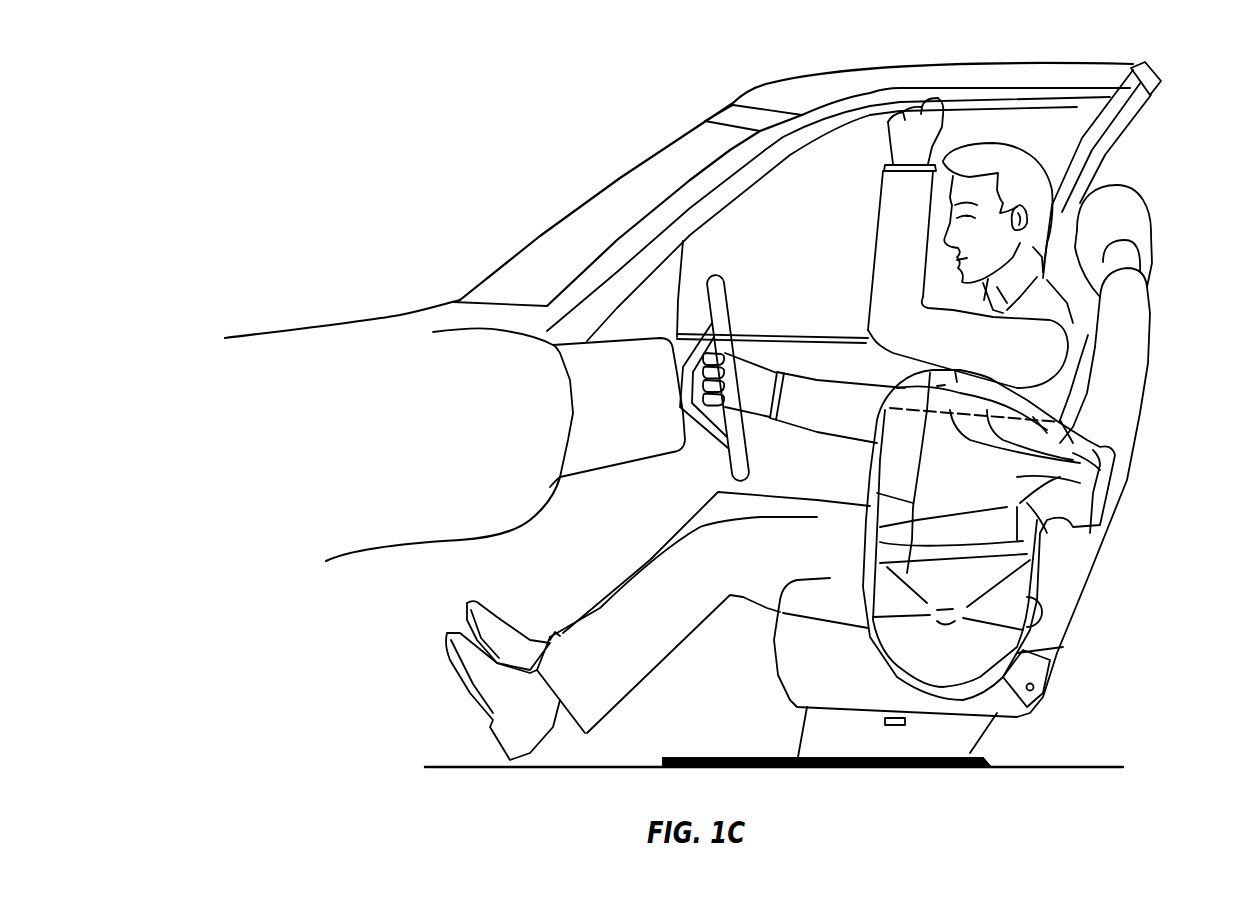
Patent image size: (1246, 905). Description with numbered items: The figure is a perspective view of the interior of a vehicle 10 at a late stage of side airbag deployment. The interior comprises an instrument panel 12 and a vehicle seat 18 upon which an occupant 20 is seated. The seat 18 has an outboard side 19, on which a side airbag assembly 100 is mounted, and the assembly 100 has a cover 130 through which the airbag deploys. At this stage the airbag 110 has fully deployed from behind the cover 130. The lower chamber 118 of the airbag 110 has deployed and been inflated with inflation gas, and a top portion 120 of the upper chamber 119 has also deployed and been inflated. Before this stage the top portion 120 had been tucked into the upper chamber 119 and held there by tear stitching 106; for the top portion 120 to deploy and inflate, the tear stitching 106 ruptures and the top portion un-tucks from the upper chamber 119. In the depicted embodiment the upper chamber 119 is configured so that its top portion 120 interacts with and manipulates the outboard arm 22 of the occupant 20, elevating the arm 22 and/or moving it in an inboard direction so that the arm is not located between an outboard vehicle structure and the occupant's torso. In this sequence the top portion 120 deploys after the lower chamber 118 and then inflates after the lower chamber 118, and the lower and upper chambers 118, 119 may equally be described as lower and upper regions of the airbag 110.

The vehicle 10 is at (665, 91).
The instrument panel 12 is at (565, 373).
The vehicle seat 18 is at (1127, 280).
The outboard side 19 is at (1132, 348).
The occupant 20 is at (1068, 318).
The outboard arm 22 is at (1000, 347).
The side airbag assembly 100 is at (1088, 419).
The tear stitching 106 is at (1077, 460).
The airbag 110 is at (1060, 516).
The lower chamber 118 is at (983, 640).
The upper chamber 119 is at (1052, 507).
The top portion 120 is at (1072, 395).
The cover 130 is at (1110, 453).